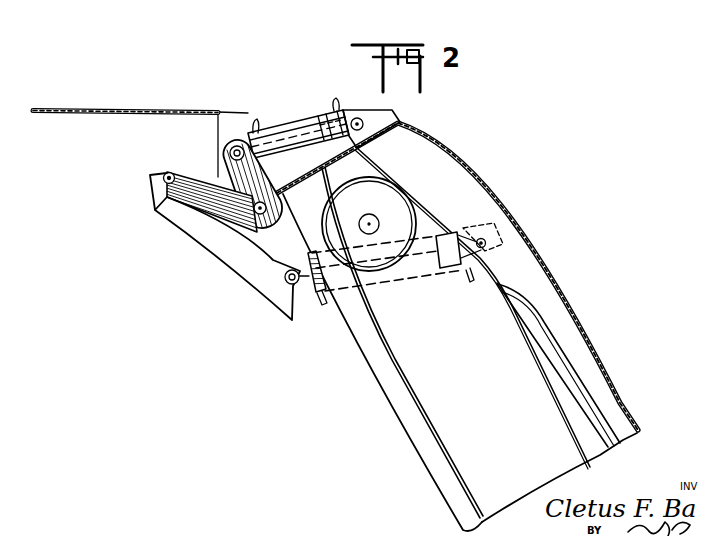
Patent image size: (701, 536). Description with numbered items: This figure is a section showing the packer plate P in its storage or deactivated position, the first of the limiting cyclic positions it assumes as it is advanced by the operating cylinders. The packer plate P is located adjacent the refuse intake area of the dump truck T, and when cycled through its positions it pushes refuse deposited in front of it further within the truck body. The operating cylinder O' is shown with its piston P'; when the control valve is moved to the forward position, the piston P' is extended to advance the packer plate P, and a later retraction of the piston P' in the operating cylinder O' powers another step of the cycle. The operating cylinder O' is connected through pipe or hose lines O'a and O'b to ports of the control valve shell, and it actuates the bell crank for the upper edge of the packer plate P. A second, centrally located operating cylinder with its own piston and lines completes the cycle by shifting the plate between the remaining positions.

The dump truck T is at (88, 108).
The operating cylinder O' is at (298, 116).
The pipe or hose line O'a is at (366, 110).
The pipe or hose line O'b is at (250, 160).
The piston P' is at (319, 115).
The packer plate P is at (223, 242).